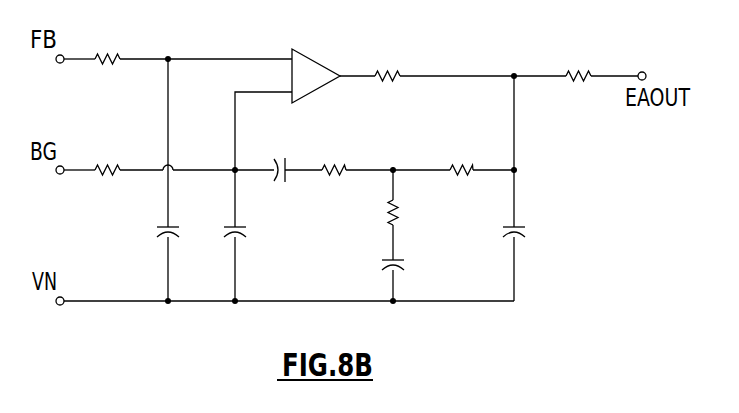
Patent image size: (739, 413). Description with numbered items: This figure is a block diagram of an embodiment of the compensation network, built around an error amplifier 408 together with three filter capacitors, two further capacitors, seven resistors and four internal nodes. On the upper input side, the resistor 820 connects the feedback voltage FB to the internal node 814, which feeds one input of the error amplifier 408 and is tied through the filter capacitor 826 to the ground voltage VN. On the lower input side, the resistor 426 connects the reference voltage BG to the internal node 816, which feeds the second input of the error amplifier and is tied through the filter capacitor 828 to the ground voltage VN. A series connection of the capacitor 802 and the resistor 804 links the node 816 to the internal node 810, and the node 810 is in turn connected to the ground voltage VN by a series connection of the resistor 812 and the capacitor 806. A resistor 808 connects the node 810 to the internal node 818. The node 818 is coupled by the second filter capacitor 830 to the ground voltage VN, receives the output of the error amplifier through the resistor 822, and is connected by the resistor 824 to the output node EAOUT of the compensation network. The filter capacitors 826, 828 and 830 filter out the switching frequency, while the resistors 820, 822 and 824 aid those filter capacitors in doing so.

The resistor 820 is at (105, 54).
The internal node 814 is at (168, 58).
The error amplifier 408 is at (302, 54).
The resistor 822 is at (391, 72).
The resistor 824 is at (582, 72).
The resistor 426 is at (105, 166).
The internal node 816 is at (235, 169).
The capacitor 802 is at (280, 157).
The resistor 804 is at (323, 166).
The internal node 810 is at (393, 168).
The resistor 808 is at (461, 167).
The internal node 818 is at (516, 170).
The filter capacitor 826 is at (157, 235).
The filter capacitor 828 is at (240, 235).
The resistor 812 is at (397, 218).
The filter capacitor 830 is at (526, 235).
The capacitor 806 is at (405, 265).